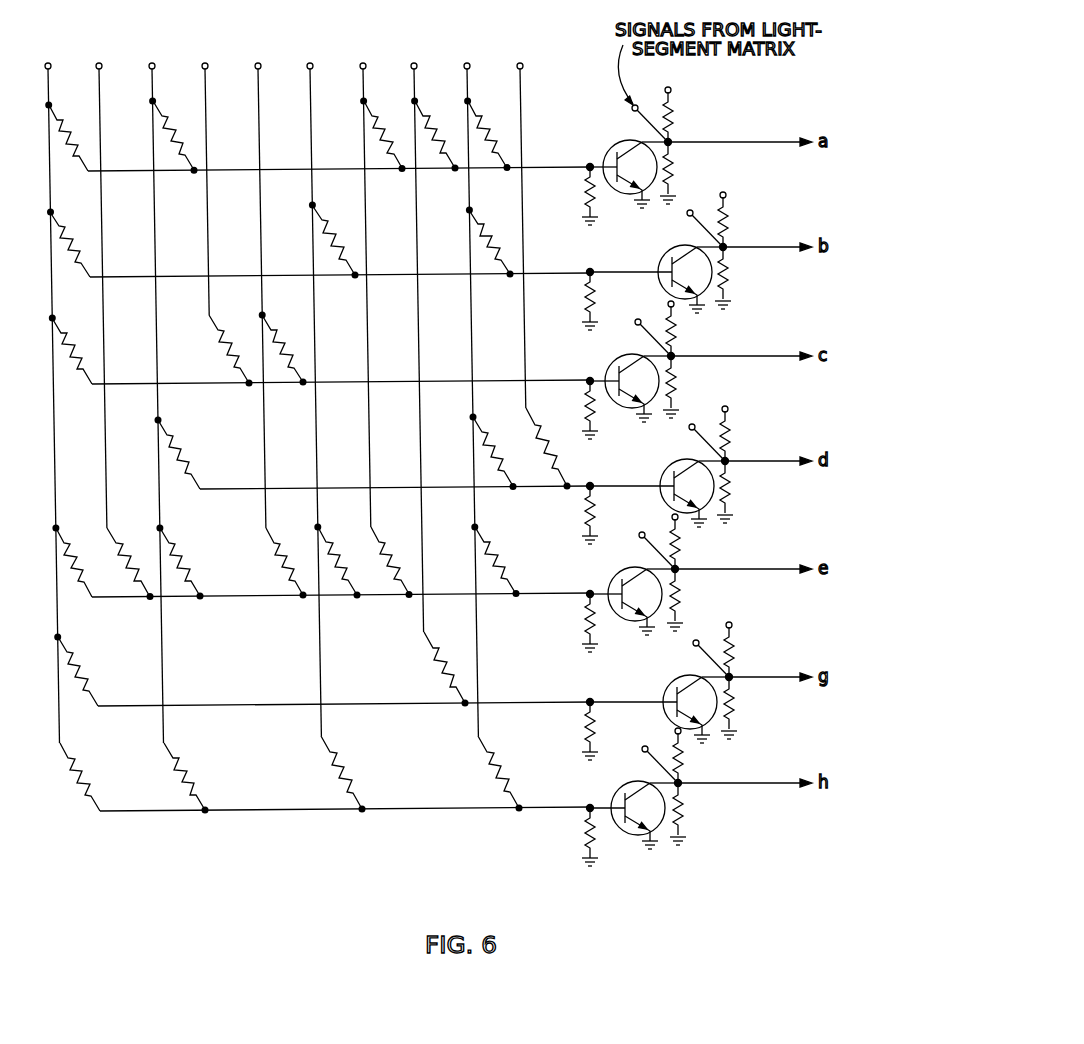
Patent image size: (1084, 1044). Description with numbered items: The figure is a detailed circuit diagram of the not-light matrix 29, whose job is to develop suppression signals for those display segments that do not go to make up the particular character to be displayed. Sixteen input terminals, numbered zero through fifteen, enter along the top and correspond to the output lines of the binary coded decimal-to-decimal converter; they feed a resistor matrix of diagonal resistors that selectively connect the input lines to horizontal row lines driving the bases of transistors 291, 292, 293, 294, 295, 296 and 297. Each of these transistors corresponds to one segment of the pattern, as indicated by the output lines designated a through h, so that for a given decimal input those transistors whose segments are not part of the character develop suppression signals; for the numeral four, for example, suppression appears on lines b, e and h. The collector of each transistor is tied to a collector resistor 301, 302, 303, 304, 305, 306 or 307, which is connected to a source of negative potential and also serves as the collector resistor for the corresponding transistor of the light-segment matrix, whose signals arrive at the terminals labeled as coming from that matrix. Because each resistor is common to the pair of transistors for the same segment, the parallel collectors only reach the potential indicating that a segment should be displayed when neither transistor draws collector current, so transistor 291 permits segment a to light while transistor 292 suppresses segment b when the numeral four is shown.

The not-light matrix 29 is at (420, 847).
The transistor 291 is at (608, 151).
The transistor 292 is at (663, 256).
The transistor 293 is at (610, 365).
The transistor 294 is at (665, 470).
The transistor 295 is at (613, 578).
The transistor 296 is at (668, 686).
The transistor 297 is at (616, 792).
The collector resistor 301 is at (672, 116).
The collector resistor 302 is at (727, 221).
The collector resistor 303 is at (675, 330).
The collector resistor 304 is at (729, 435).
The collector resistor 305 is at (679, 543).
The collector resistor 306 is at (733, 651).
The collector resistor 307 is at (682, 757).